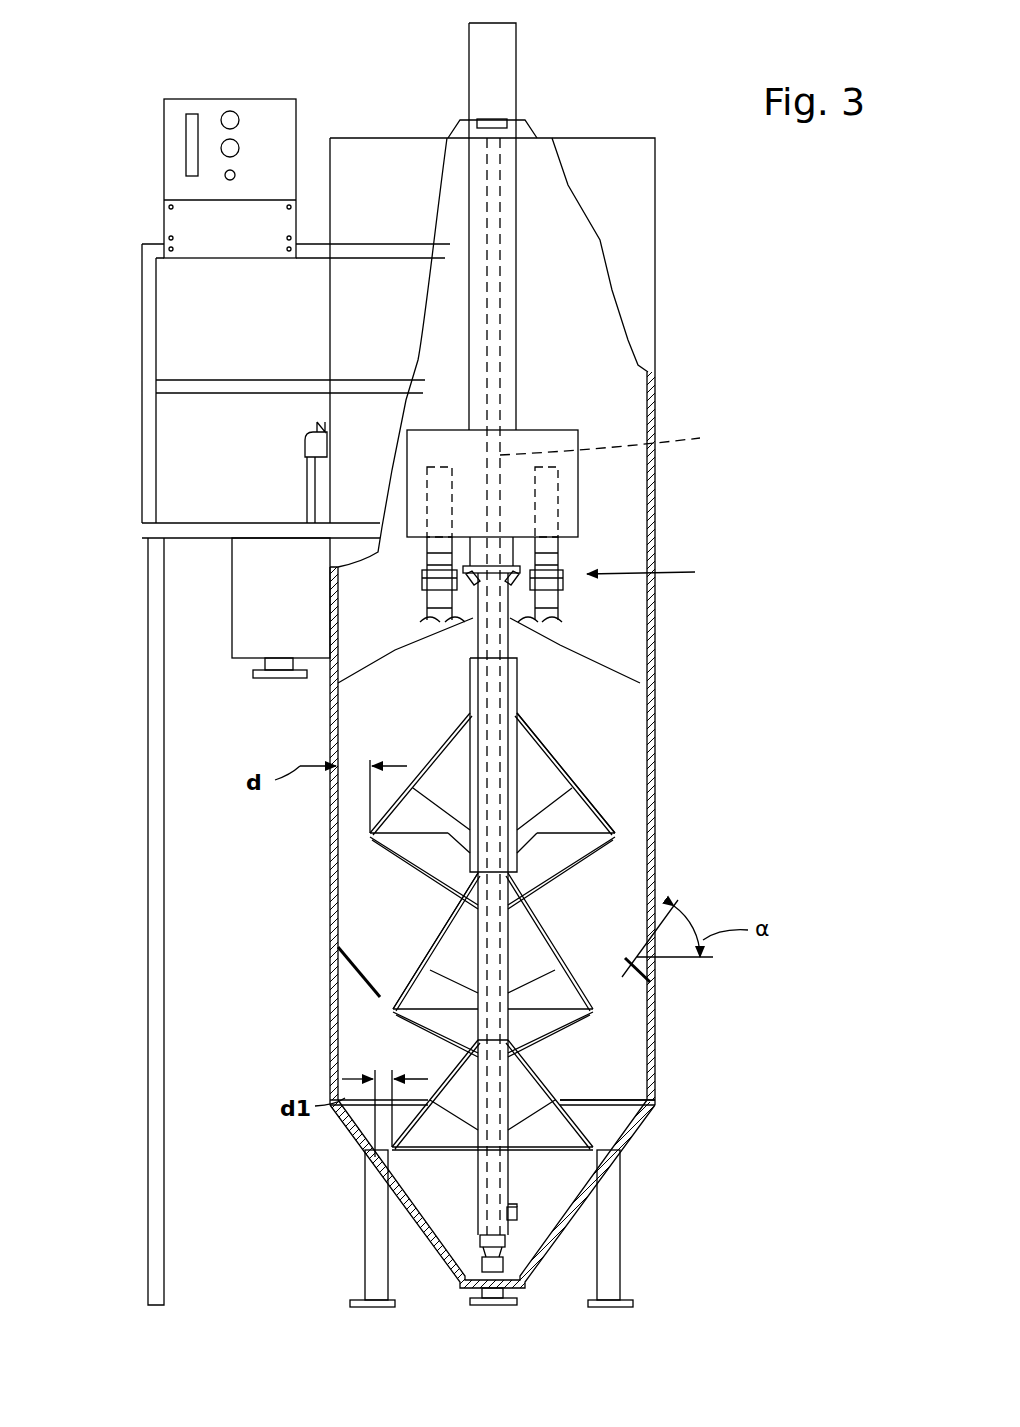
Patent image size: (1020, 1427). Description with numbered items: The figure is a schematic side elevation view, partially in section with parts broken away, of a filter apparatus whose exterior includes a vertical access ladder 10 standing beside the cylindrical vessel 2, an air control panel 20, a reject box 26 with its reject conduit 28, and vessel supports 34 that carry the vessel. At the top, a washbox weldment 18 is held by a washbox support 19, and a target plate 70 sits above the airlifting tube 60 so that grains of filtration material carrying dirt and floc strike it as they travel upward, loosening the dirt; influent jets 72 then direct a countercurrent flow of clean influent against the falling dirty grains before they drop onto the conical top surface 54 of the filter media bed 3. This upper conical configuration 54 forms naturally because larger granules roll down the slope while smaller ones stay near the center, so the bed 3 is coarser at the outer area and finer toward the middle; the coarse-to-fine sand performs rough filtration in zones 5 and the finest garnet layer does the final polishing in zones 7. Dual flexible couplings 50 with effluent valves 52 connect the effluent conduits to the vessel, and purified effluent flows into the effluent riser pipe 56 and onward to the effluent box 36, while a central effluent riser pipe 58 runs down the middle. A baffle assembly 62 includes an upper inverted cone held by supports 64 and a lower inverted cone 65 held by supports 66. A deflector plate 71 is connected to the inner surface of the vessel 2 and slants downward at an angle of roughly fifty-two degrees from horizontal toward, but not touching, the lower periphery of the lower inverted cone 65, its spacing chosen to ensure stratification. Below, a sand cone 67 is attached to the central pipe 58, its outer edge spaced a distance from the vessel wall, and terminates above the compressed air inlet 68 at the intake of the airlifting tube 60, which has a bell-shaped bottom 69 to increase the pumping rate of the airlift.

The vertical access ladder 10 is at (126, 910).
The vessel 2 is at (332, 868).
The filter media bed 3 is at (362, 716).
The rough filtration zones 5 is at (368, 1048).
The final polishing zones 7 is at (535, 722).
The washbox weldment 18 is at (516, 62).
The washbox support 19 is at (456, 124).
The air control panel 20 is at (240, 99).
The reject box 26 is at (232, 599).
The reject conduit 28 is at (266, 680).
The vessel supports 34 is at (620, 1210).
The effluent box 36 is at (557, 428).
The dual flexible couplings 50 is at (430, 562).
The effluent valves 52 is at (660, 572).
The upper conical configuration 54 is at (600, 663).
The effluent riser pipe 56 is at (517, 783).
The central effluent riser pipe 58 is at (478, 1020).
The airlifting tube 60 is at (618, 440).
The baffle assembly 62 is at (567, 748).
The supports 64 is at (570, 875).
The lower inverted cone 65 is at (435, 945).
The supports 66 is at (560, 1030).
The sand cone 67 is at (610, 1110).
The compressed air inlet 68 is at (518, 1212).
The bell-shaped bottom 69 is at (505, 1265).
The target plate 70 is at (500, 119).
The deflector plate 71 is at (362, 950).
The influent jets 72 is at (522, 570).